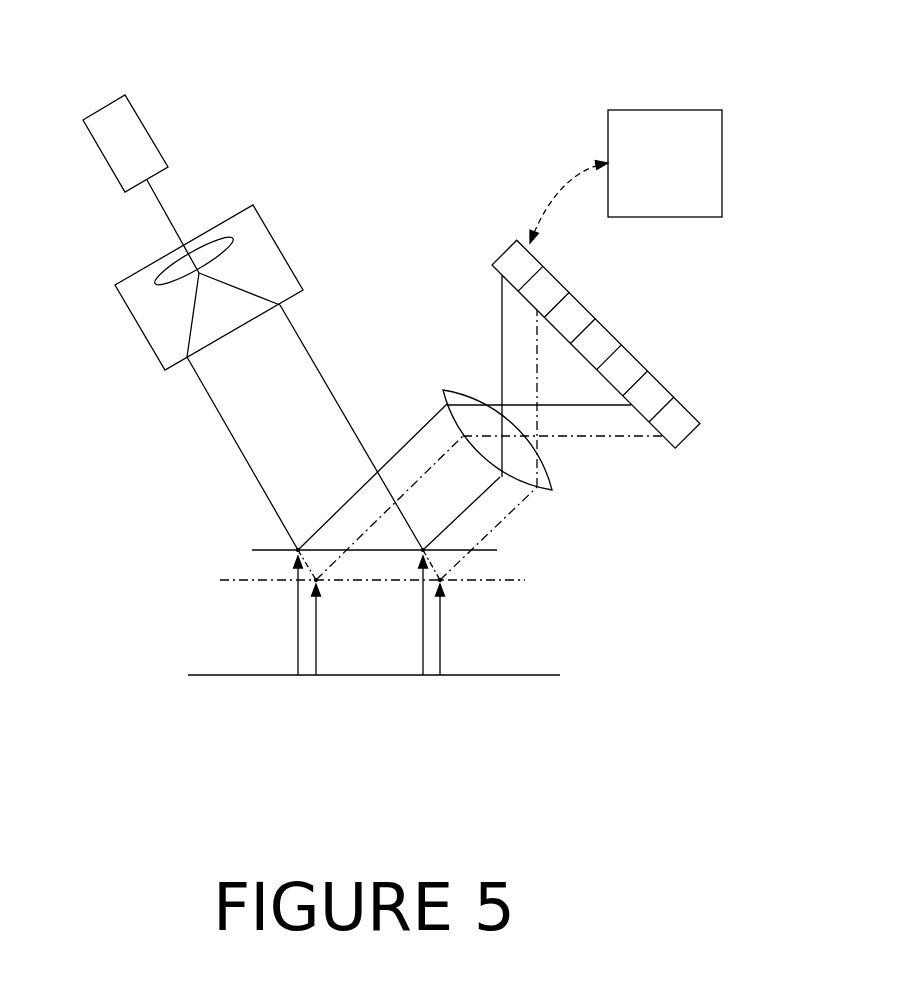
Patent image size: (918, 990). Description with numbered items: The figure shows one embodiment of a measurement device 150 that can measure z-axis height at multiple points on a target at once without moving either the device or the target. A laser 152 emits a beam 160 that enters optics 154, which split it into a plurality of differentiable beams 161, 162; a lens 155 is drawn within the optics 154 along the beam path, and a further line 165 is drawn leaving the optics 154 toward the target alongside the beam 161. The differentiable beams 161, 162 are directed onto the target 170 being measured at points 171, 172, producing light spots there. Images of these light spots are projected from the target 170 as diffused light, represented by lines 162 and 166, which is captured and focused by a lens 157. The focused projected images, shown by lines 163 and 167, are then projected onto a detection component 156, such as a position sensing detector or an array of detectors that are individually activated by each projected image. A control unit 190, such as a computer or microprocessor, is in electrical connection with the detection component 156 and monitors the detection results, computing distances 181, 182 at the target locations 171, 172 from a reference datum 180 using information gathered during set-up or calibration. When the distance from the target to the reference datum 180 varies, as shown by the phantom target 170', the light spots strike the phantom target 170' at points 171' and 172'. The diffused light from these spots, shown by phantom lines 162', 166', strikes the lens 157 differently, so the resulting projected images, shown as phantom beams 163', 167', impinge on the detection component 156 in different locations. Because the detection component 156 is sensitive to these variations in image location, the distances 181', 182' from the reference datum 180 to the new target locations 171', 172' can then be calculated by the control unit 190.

The measurement device 150 is at (456, 76).
The laser 152 is at (143, 125).
The optics 154 is at (275, 234).
The lens 155 is at (233, 240).
The detection component 156 is at (692, 413).
The lens 157 is at (560, 493).
The beam 160 is at (168, 210).
The differentiable beam 161 is at (242, 290).
The differentiable beam 162 is at (496, 513).
The phantom line 162' is at (516, 533).
The focused projected image 163 is at (462, 376).
The phantom beam 163' is at (480, 398).
The light beam 165 is at (193, 317).
The diffused light line 166 is at (372, 468).
The phantom line 166' is at (376, 508).
The focused projected image 167 is at (539, 454).
The phantom beam 167' is at (600, 473).
The target 170 is at (317, 542).
The phantom target 170' is at (314, 581).
The point 171 is at (443, 516).
The point 171' is at (510, 580).
The point 172 is at (246, 520).
The point 172' is at (350, 590).
The reference datum 180 is at (538, 678).
The distance 181 is at (400, 677).
The distance 181' is at (482, 661).
The distance 182 is at (247, 641).
The distance 182' is at (355, 662).
The control unit 190 is at (673, 217).